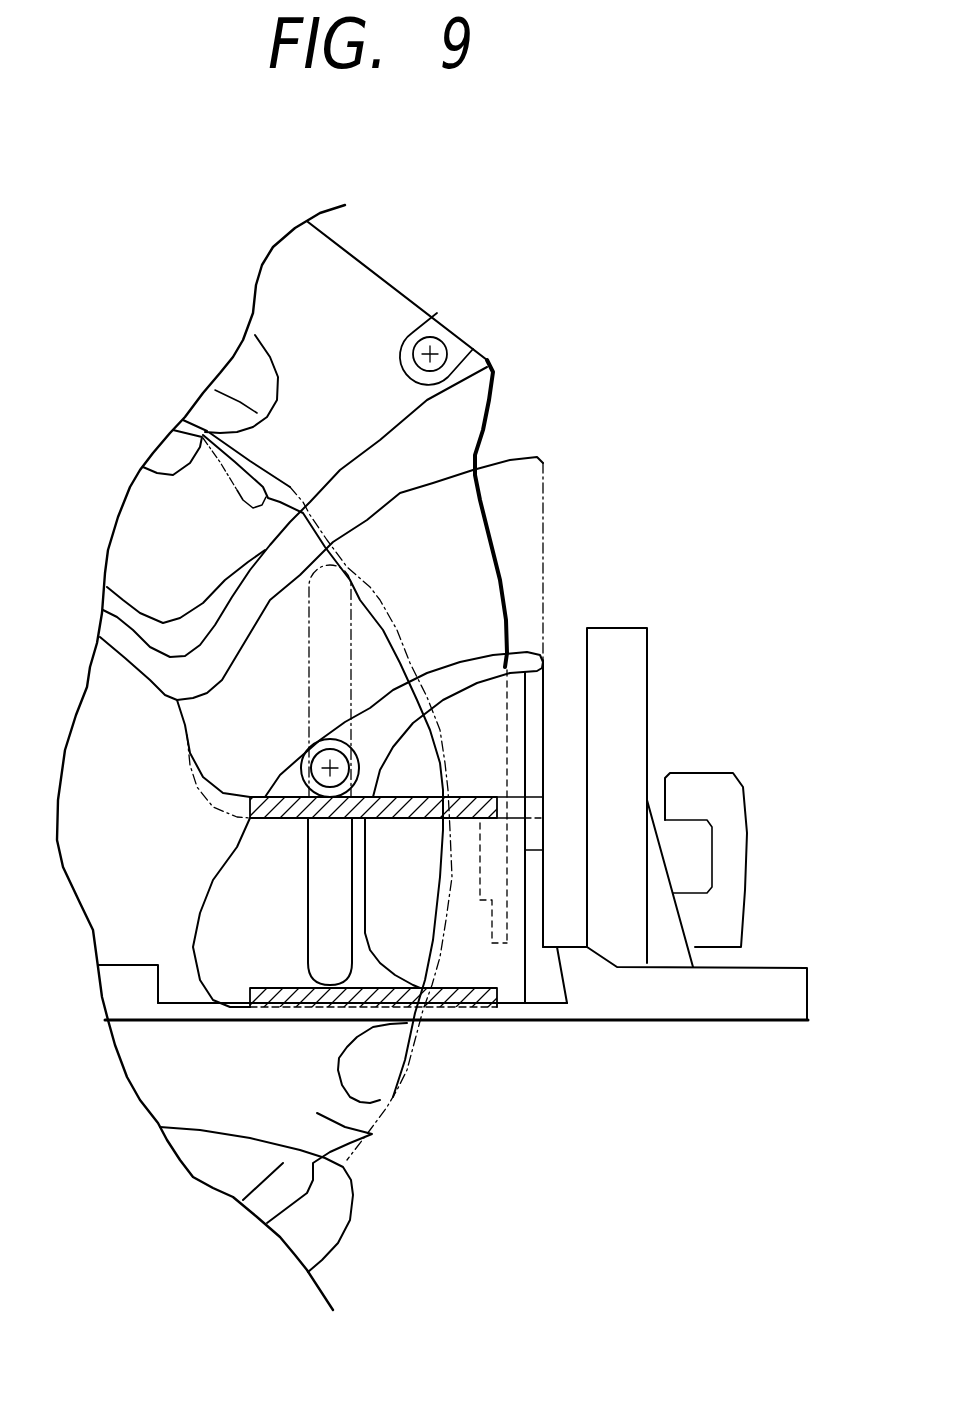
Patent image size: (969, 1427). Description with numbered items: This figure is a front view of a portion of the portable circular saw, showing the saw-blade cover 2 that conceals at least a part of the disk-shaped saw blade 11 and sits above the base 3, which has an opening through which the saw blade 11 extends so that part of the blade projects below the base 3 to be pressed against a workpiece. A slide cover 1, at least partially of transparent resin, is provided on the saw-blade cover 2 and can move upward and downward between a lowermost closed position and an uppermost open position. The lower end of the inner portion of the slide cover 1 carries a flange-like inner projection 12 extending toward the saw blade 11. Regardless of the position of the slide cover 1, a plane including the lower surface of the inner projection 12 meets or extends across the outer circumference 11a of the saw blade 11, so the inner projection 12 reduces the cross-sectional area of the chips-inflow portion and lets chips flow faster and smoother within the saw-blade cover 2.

The slide cover 1 is at (409, 703).
The saw-blade cover 2 is at (300, 742).
The base 3 is at (456, 889).
The saw blade 11 is at (343, 854).
The outer circumference 11a is at (524, 1006).
The inner projection 12 is at (454, 847).